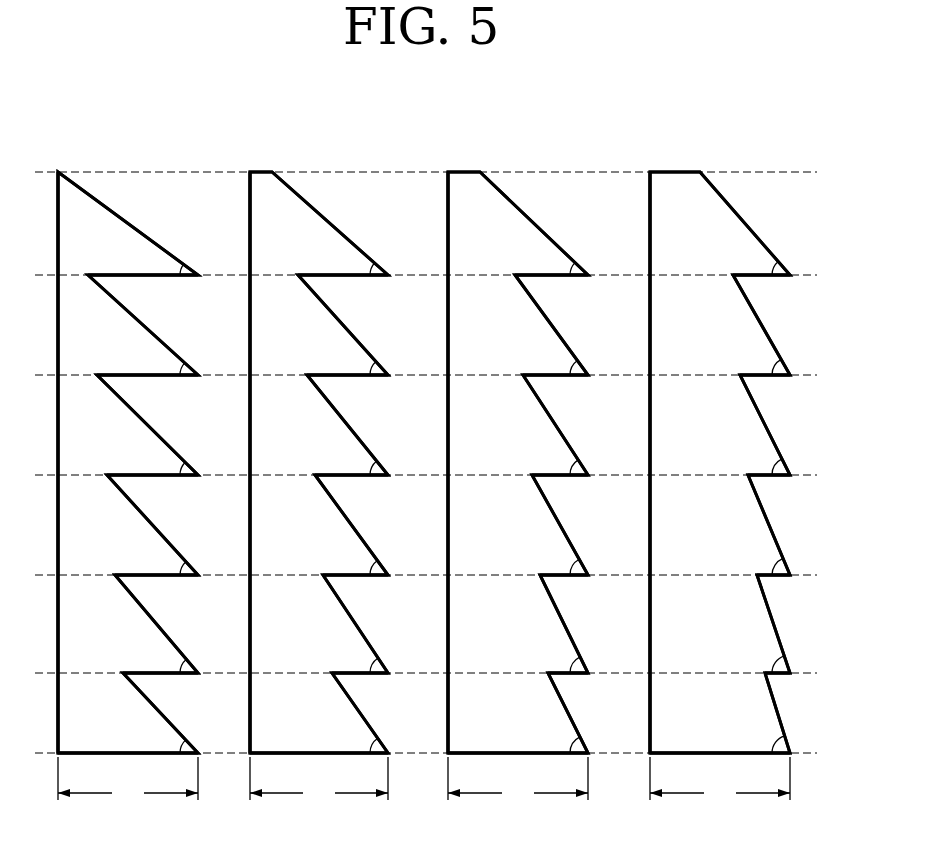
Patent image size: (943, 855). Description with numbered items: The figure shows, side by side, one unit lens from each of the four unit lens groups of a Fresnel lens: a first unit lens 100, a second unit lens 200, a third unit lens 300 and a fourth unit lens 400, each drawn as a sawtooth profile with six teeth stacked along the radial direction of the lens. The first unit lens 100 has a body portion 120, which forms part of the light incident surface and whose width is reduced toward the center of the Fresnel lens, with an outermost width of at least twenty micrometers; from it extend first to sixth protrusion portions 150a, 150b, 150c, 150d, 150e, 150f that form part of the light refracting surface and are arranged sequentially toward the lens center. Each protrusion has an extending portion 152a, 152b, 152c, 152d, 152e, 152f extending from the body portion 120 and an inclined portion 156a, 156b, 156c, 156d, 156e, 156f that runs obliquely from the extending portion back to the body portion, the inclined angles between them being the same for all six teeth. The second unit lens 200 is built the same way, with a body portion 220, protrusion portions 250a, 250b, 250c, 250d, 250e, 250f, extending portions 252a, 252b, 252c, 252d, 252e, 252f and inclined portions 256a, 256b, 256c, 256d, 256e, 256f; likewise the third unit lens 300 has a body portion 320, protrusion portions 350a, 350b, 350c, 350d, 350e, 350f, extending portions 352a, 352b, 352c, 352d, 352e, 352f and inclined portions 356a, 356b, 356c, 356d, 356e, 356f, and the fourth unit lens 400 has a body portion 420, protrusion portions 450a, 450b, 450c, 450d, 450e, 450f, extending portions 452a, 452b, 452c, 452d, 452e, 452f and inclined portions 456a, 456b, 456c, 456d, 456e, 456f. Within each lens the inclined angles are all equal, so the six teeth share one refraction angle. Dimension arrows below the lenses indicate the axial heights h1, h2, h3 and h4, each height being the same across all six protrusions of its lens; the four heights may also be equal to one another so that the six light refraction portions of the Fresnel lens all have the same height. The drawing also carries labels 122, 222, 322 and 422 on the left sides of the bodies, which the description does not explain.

The first unit lens 100 is at (145, 158).
The body portion 120 is at (72, 220).
The first side surface 122 is at (57, 205).
The first protrusion portion 150a is at (145, 223).
The second protrusion portion 150b is at (160, 325).
The third protrusion portion 150c is at (164, 425).
The fourth protrusion portion 150d is at (169, 525).
The fifth protrusion portion 150e is at (173, 624).
The sixth protrusion portion 150f is at (175, 713).
The extending portion 152a is at (160, 258).
The extending portion 152b is at (164, 360).
The extending portion 152c is at (169, 460).
The extending portion 152d is at (173, 560).
The extending portion 152e is at (177, 659).
The extending portion 152f is at (143, 742).
The inclined portion 156a is at (145, 223).
The inclined portion 156b is at (160, 325).
The inclined portion 156c is at (164, 425).
The inclined portion 156d is at (169, 525).
The inclined portion 156e is at (173, 624).
The inclined portion 156f is at (175, 713).
The second unit lens 200 is at (313, 158).
The body portion 220 is at (264, 220).
The second side surface 222 is at (249, 205).
The first protrusion portion 250a is at (347, 223).
The second protrusion portion 250b is at (360, 325).
The third protrusion portion 250c is at (364, 425).
The fourth protrusion portion 250d is at (368, 525).
The fifth protrusion portion 250e is at (372, 624).
The sixth protrusion portion 250f is at (375, 713).
The extending portion 252a is at (360, 258).
The extending portion 252b is at (364, 360).
The extending portion 252c is at (368, 460).
The extending portion 252d is at (372, 560).
The extending portion 252e is at (377, 659).
The extending portion 252f is at (334, 742).
The inclined portion 256a is at (347, 223).
The inclined portion 256b is at (360, 325).
The inclined portion 256c is at (364, 425).
The inclined portion 256d is at (368, 525).
The inclined portion 256e is at (372, 624).
The inclined portion 256f is at (375, 713).
The third unit lens 300 is at (522, 158).
The body portion 320 is at (462, 220).
The third side surface 322 is at (447, 205).
The first protrusion portion 350a is at (551, 223).
The second protrusion portion 350b is at (568, 325).
The third protrusion portion 350c is at (572, 425).
The fourth protrusion portion 350d is at (577, 525).
The fifth protrusion portion 350e is at (581, 624).
The sixth protrusion portion 350f is at (583, 713).
The extending portion 352a is at (568, 258).
The extending portion 352b is at (572, 360).
The extending portion 352c is at (576, 460).
The extending portion 352d is at (581, 560).
The extending portion 352e is at (585, 659).
The extending portion 352f is at (533, 742).
The inclined portion 356a is at (551, 223).
The inclined portion 356b is at (568, 325).
The inclined portion 356c is at (572, 425).
The inclined portion 356d is at (577, 525).
The inclined portion 356e is at (581, 624).
The inclined portion 356f is at (583, 713).
The fourth unit lens 400 is at (738, 158).
The body portion 420 is at (662, 220).
The fourth side surface 422 is at (649, 205).
The first protrusion portion 450a is at (762, 223).
The second protrusion portion 450b is at (778, 325).
The third protrusion portion 450c is at (781, 425).
The fourth protrusion portion 450d is at (786, 525).
The fifth protrusion portion 450e is at (790, 624).
The sixth protrusion portion 450f is at (792, 713).
The extending portion 452a is at (778, 258).
The extending portion 452b is at (782, 360).
The extending portion 452c is at (785, 460).
The extending portion 452d is at (790, 560).
The extending portion 452e is at (794, 659).
The extending portion 452f is at (735, 742).
The inclined portion 456a is at (762, 223).
The inclined portion 456b is at (778, 325).
The inclined portion 456c is at (781, 425).
The inclined portion 456d is at (786, 525).
The inclined portion 456e is at (790, 624).
The inclined portion 456f is at (792, 713).
The height h1 is at (128, 780).
The height h2 is at (319, 780).
The height h3 is at (518, 780).
The height h4 is at (720, 780).